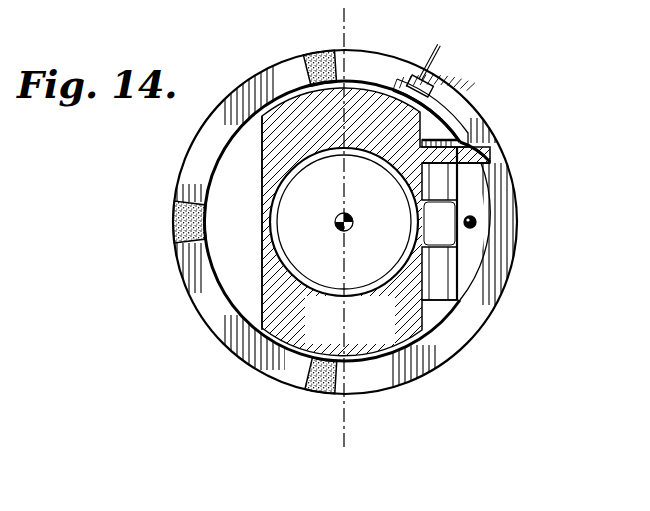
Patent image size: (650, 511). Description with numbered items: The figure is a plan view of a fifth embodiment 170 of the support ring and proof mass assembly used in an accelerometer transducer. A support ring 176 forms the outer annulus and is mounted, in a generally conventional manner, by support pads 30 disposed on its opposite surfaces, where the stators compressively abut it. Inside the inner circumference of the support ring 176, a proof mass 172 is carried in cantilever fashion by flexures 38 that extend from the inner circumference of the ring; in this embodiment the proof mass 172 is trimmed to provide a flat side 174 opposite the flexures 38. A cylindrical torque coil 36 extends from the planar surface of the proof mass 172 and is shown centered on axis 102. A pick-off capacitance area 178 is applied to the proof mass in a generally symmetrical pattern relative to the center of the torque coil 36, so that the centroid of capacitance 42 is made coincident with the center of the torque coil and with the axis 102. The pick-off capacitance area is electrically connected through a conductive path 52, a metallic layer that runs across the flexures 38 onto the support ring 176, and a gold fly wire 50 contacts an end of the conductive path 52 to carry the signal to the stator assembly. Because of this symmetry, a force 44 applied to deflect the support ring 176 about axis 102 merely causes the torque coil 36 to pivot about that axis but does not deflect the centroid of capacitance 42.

The support pads 30 is at (319, 48).
The torque coil 36 is at (389, 277).
The flexures 38 is at (447, 178).
The centroid of capacitance 42 is at (348, 212).
The force 44 is at (477, 222).
The gold fly wire 50 is at (441, 45).
The conductive path 52 is at (450, 108).
The axis 102 is at (346, 423).
The fifth embodiment 170 is at (149, 213).
The proof mass 172 is at (260, 108).
The flat side 174 is at (262, 157).
The support ring 176 is at (213, 318).
The pick-off capacitance area 178 is at (362, 332).